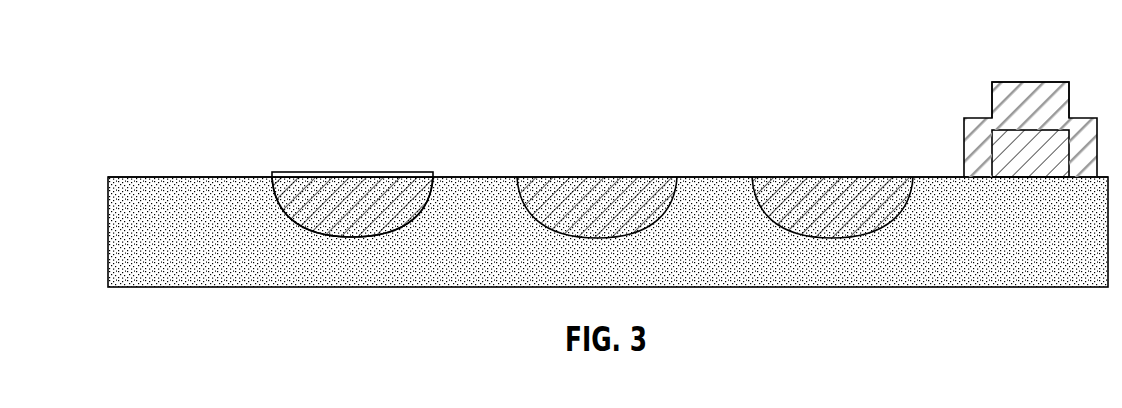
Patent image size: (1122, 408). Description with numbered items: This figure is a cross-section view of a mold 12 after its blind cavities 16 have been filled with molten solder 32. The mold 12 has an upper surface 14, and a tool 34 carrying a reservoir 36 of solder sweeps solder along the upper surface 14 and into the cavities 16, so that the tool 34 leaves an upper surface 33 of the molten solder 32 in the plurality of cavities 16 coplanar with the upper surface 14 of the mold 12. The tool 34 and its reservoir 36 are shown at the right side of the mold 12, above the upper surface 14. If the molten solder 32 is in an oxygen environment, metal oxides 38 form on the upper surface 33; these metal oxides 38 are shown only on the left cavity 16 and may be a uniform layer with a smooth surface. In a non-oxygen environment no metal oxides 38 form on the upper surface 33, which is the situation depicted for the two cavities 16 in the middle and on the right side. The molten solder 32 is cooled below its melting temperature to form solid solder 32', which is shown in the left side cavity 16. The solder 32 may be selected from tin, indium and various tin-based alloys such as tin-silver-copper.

The mold 12 is at (108, 253).
The upper surface 14 is at (213, 177).
The cavities 16 is at (290, 185).
The molten solder 32 is at (670, 145).
The solid solder 32' is at (352, 160).
The upper surface of molten solder 33 is at (343, 175).
The metal oxides 38 is at (373, 175).
The tool 34 is at (992, 97).
The reservoir 36 is at (1037, 130).